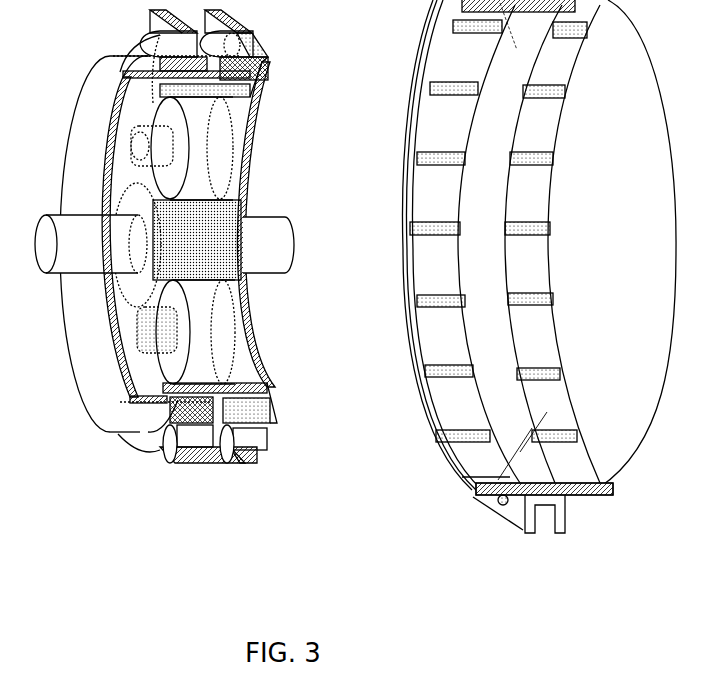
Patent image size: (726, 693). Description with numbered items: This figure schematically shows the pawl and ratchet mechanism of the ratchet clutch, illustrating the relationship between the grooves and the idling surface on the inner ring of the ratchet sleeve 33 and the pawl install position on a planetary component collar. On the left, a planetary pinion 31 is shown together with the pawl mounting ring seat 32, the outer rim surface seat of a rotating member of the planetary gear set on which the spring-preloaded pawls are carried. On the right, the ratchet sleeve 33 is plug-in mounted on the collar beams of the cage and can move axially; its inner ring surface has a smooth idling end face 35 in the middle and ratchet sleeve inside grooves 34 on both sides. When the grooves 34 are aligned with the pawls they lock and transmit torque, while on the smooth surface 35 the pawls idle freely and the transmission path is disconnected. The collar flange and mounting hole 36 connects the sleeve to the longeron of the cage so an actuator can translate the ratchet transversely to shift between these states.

The planetary pinion 31 is at (164, 236).
The pawl mounting ring seat 32 is at (119, 254).
The ratchet sleeve 33 is at (539, 245).
The ratchet sleeve inside groove 34 is at (498, 245).
The smooth idling end face in the middle of inner ratchet 35 is at (522, 446).
The collar flange and mounting hole of ratchet sleeve 36 is at (542, 508).